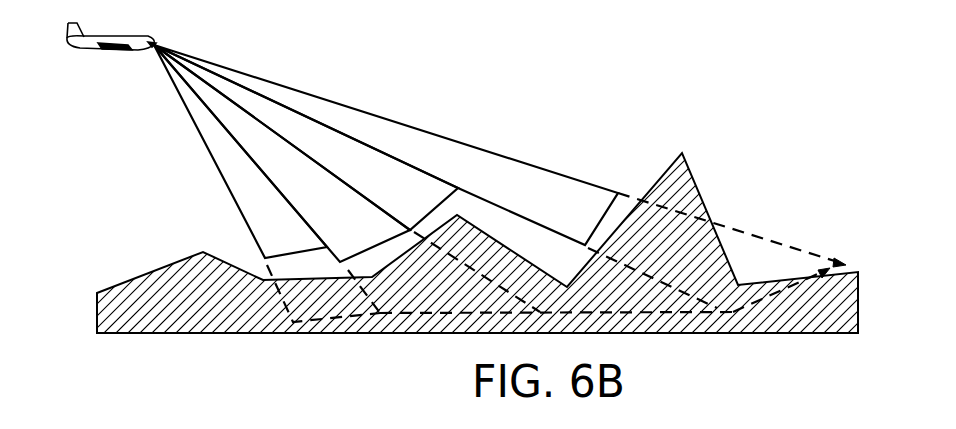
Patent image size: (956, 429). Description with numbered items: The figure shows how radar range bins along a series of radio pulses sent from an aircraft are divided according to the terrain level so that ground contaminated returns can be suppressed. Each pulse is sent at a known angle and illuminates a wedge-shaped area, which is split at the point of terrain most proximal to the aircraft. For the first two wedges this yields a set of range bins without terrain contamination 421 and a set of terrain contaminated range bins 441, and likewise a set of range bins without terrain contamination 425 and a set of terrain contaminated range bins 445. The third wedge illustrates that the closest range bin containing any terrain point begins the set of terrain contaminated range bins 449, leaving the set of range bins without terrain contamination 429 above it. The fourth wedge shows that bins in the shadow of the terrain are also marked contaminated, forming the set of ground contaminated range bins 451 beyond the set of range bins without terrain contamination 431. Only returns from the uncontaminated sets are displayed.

The set of range bins without terrain contamination 421 is at (291, 245).
The set of range bins without terrain contamination 425 is at (361, 233).
The set of range bins without terrain contamination 429 is at (418, 202).
The set of range bins without terrain contamination 431 is at (521, 192).
The set of terrain contaminated range bins 441 is at (319, 277).
The set of terrain contaminated range bins 445 is at (387, 277).
The set of terrain contaminated range bins 449 is at (549, 257).
The set of ground contaminated range bins 451 is at (766, 270).